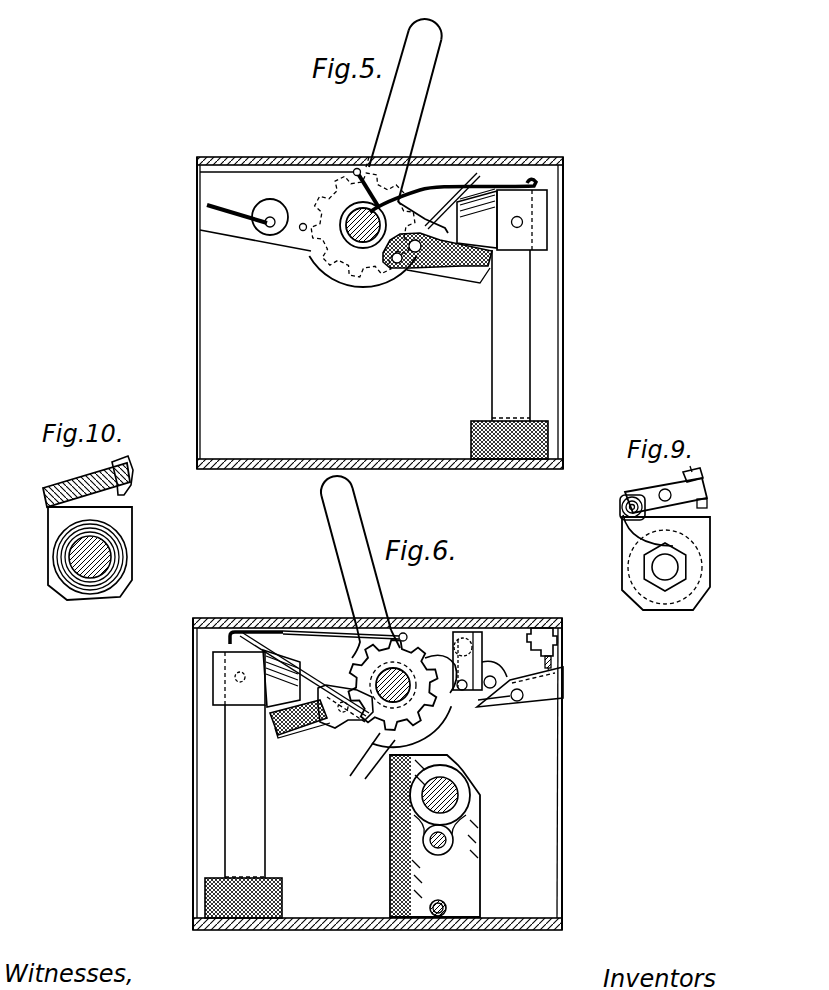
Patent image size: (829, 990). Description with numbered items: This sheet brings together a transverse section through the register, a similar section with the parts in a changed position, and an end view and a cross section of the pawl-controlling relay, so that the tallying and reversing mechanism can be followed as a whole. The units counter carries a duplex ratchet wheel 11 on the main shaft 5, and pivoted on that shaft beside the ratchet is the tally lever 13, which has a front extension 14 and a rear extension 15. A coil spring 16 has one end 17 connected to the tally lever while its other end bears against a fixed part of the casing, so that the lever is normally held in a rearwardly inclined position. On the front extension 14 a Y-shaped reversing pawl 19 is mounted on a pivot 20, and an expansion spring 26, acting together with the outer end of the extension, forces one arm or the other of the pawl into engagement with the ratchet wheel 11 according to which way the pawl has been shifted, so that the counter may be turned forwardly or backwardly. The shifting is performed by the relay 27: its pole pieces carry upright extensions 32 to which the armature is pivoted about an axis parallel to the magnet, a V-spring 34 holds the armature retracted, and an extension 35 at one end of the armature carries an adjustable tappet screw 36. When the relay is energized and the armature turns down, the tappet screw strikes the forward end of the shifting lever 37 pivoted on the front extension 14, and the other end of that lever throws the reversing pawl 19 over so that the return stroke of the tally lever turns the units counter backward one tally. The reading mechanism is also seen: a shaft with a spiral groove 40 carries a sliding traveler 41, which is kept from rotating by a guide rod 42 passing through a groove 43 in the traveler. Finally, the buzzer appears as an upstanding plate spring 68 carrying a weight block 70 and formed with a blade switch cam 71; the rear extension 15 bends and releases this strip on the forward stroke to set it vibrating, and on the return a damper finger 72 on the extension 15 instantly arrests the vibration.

In FIG. 5, the main shaft 5 is at (361, 242).
In FIG. 6, the main shaft 5 is at (360, 745).
In FIG. 5, the duplex ratchet wheel 11 is at (363, 266).
In FIG. 6, the duplex ratchet wheel 11 is at (383, 720).
In FIG. 5, the tally lever 13 is at (428, 82).
In FIG. 6, the tally lever 13 is at (368, 576).
In FIG. 5, the front extension 14 is at (278, 211).
In FIG. 6, the rear extension 15 is at (302, 730).
In FIG. 5, the coil spring 16 is at (387, 217).
In FIG. 6, the coil spring 16 is at (409, 665).
In FIG. 5, the end of coil spring 17 is at (357, 169).
In FIG. 6, the end of coil spring 17 is at (398, 660).
In FIG. 5, the reversing pawl 19 is at (323, 253).
In FIG. 6, the reversing pawl 19 is at (447, 712).
In FIG. 5, the pivot 20 is at (302, 230).
In FIG. 6, the pivot 20 is at (466, 690).
In FIG. 5, the expansion spring 26 is at (252, 228).
In FIG. 6, the expansion spring 26 is at (517, 700).
In FIG. 10, the relay 27 is at (125, 563).
In FIG. 6, the upright extensions 32 is at (467, 661).
In FIG. 9, the upright extensions 32 is at (620, 509).
In FIG. 9, the V-spring 34 is at (632, 538).
In FIG. 6, the extension 35 is at (553, 641).
In FIG. 10, the extension 35 is at (130, 486).
In FIG. 9, the extension 35 is at (705, 488).
In FIG. 6, the tappet screw 36 is at (543, 626).
In FIG. 10, the tappet screw 36 is at (130, 470).
In FIG. 9, the tappet screw 36 is at (703, 475).
In FIG. 6, the shifting lever 37 is at (553, 702).
In FIG. 6, the spiral groove 40 is at (448, 808).
In FIG. 6, the traveler 41 is at (472, 860).
In FIG. 6, the guide rod 42 is at (440, 902).
In FIG. 6, the groove 43 is at (450, 905).
In FIG. 5, the upstanding plate spring 68 is at (509, 354).
In FIG. 6, the upstanding plate spring 68 is at (252, 803).
In FIG. 5, the weight block 70 is at (545, 220).
In FIG. 6, the weight block 70 is at (213, 672).
In FIG. 5, the blade switch cam 71 is at (477, 218).
In FIG. 6, the blade switch cam 71 is at (288, 678).
In FIG. 5, the damper finger 72 is at (448, 268).
In FIG. 6, the damper finger 72 is at (347, 725).